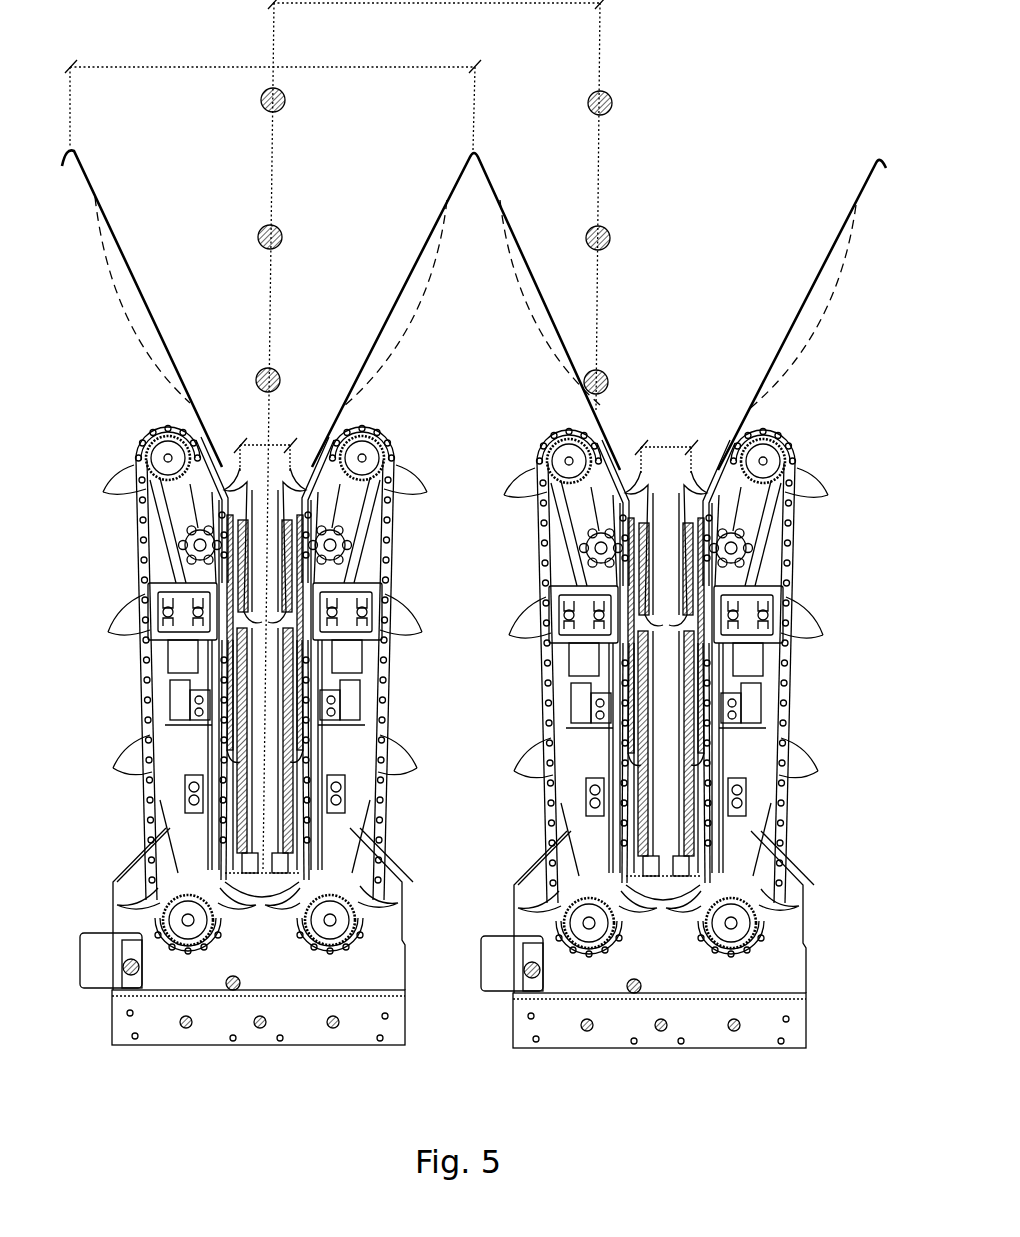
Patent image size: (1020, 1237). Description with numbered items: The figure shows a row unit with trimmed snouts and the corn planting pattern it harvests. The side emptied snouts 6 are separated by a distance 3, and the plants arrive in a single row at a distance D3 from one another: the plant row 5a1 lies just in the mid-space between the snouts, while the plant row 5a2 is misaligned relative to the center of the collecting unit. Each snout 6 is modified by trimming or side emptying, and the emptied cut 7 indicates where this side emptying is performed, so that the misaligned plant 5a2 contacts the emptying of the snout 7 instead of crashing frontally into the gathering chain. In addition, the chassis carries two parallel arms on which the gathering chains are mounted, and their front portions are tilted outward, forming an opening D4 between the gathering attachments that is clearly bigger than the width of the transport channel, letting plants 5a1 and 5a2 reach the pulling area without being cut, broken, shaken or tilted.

The distance between the side emptied snouts 3 is at (342, 70).
The plant row 5a1 is at (261, 102).
The plant row 5a2 is at (612, 100).
The side emptied snout 6 is at (72, 181).
The emptied cut of the snout 7 is at (134, 321).
The distance between plants D3 is at (490, 6).
The distance between the gathering attachments D4 is at (265, 446).